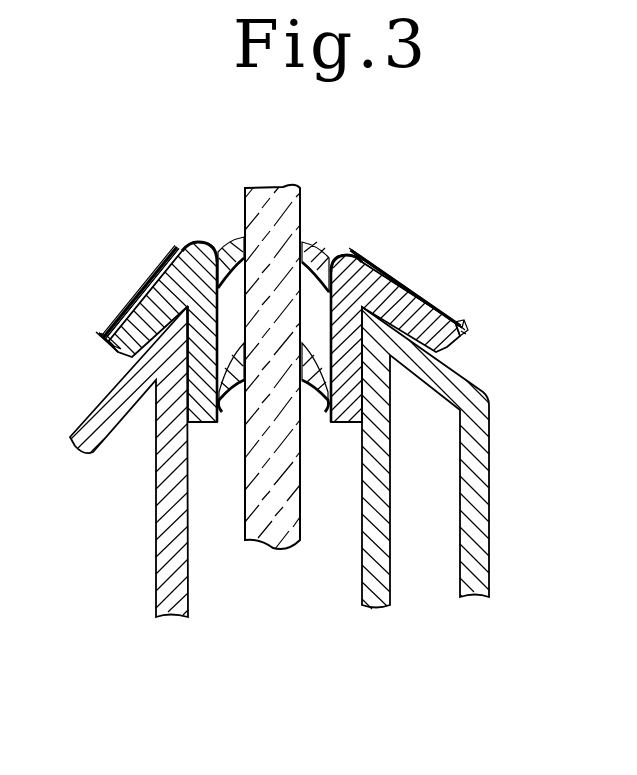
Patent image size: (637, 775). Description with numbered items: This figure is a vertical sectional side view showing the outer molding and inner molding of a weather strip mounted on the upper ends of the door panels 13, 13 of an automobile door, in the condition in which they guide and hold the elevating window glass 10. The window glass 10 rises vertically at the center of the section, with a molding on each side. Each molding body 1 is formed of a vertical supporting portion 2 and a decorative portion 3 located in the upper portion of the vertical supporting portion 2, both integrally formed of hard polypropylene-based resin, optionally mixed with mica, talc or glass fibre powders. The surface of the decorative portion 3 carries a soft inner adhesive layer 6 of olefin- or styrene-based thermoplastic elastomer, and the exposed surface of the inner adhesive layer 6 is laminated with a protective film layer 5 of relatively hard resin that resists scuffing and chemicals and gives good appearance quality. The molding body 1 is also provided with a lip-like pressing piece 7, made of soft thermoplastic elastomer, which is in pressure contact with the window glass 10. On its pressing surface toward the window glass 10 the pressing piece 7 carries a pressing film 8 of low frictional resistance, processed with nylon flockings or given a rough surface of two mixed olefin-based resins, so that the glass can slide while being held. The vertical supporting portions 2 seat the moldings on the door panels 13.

The molding body 1 is at (192, 239).
The vertical supporting portion 2 is at (350, 368).
The decorative portion 3 is at (142, 338).
The protective film layer 5 is at (172, 258).
The inner adhesive layer 6 is at (138, 303).
The pressing piece 7 is at (241, 282).
The pressing film 8 is at (314, 412).
The elevating window glass 10 is at (272, 207).
The door panel 13 is at (168, 474).